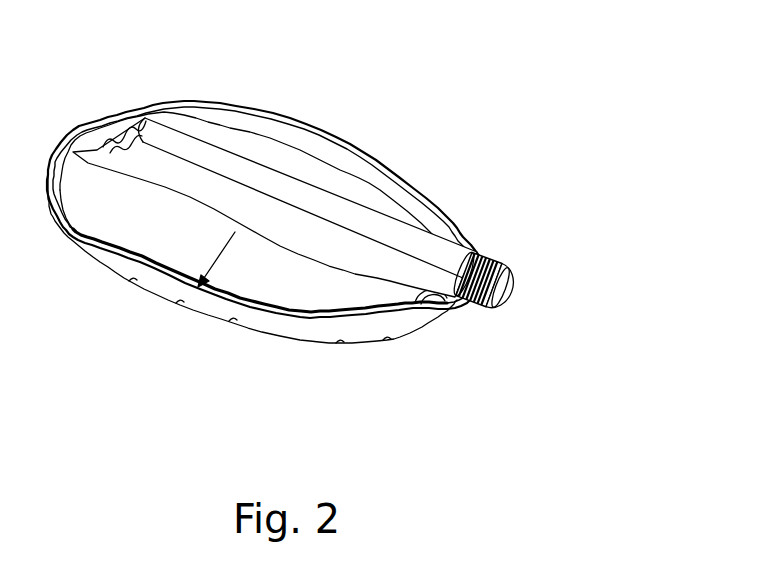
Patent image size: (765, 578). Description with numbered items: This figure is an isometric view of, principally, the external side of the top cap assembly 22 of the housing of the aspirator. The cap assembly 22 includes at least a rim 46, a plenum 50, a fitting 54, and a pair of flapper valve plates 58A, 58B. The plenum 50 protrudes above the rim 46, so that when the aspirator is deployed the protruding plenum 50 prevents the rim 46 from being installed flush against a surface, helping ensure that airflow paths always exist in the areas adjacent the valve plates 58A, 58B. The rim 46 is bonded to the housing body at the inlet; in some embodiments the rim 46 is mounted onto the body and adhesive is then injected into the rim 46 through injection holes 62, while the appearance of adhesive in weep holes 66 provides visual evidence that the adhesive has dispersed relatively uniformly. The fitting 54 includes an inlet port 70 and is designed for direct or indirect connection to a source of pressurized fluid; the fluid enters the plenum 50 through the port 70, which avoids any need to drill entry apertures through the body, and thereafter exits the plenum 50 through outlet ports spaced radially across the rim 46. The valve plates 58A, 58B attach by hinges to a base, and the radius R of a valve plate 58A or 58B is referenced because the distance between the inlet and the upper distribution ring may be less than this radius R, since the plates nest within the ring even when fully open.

The top cap assembly 22 is at (347, 72).
The rim 46 is at (398, 168).
The plenum 50 is at (253, 173).
The fitting 54 is at (488, 254).
The flapper valve plate 58A is at (172, 252).
The flapper valve plate 58B is at (331, 172).
The injection holes 62 is at (262, 325).
The weep holes 66 is at (340, 345).
The inlet port 70 is at (512, 302).
The radius of valve plate R is at (222, 259).